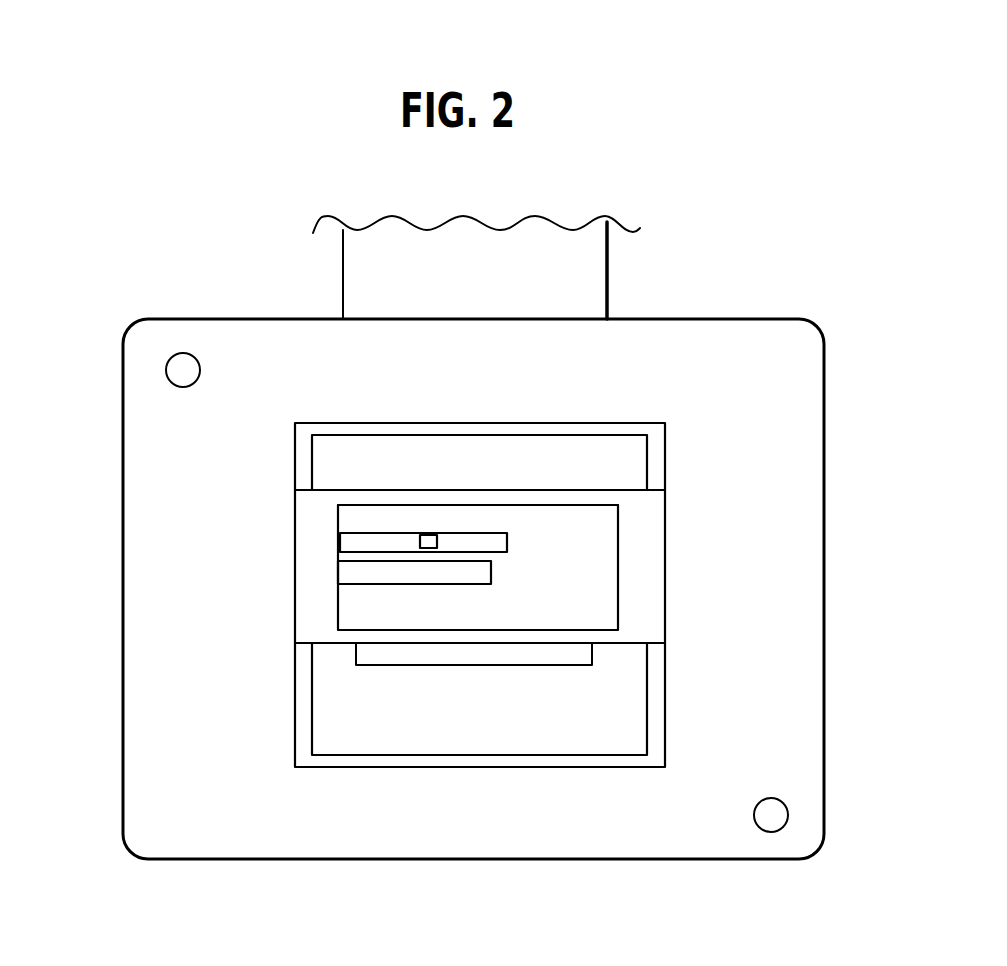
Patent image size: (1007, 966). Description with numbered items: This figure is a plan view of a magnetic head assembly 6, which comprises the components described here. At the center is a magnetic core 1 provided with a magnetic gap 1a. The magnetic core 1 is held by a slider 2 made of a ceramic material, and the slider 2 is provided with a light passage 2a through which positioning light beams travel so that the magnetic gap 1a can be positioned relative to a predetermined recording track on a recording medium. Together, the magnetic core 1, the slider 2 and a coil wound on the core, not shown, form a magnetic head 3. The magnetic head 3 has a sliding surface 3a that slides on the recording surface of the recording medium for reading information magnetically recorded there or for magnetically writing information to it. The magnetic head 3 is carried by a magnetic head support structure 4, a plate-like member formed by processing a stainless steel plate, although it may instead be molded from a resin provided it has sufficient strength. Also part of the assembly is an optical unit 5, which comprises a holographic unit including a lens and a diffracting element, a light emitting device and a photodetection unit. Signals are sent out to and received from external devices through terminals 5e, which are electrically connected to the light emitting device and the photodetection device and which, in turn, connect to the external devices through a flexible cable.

The magnetic core 1 is at (367, 542).
The magnetic gap 1a is at (430, 535).
The slider 2 is at (612, 607).
The light passage 2a is at (350, 572).
The magnetic head 3 is at (612, 561).
The sliding surface 3a is at (612, 523).
The magnetic head support structure 4 is at (817, 393).
The optical unit 5 is at (622, 703).
The terminals 5e is at (607, 280).
The magnetic head assembly 6 is at (513, 544).